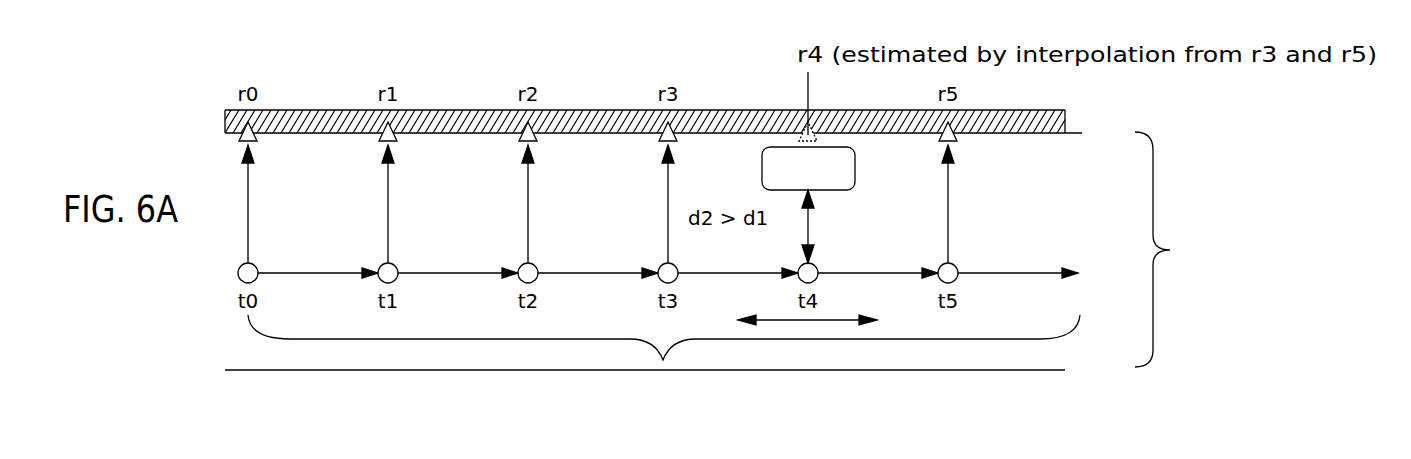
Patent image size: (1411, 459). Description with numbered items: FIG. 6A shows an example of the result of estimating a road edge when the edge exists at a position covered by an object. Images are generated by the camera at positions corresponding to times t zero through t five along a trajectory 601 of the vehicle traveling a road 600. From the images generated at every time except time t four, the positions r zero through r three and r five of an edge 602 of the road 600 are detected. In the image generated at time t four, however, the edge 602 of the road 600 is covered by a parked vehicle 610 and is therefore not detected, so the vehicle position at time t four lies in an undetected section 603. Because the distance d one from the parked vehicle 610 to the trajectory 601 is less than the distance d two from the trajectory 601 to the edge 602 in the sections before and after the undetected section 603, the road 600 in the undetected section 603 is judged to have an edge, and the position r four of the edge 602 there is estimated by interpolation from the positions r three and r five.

The road 600 is at (1184, 249).
The trajectory 601 is at (663, 362).
The edge 602 is at (1082, 133).
The undetected section 603 is at (808, 322).
The parked vehicle 610 is at (782, 147).